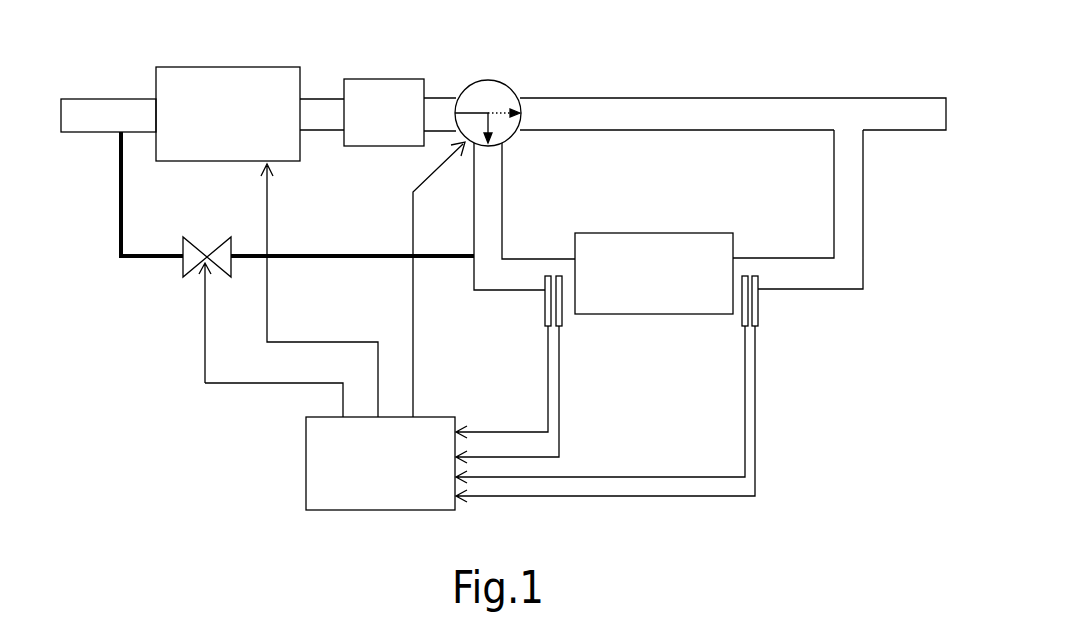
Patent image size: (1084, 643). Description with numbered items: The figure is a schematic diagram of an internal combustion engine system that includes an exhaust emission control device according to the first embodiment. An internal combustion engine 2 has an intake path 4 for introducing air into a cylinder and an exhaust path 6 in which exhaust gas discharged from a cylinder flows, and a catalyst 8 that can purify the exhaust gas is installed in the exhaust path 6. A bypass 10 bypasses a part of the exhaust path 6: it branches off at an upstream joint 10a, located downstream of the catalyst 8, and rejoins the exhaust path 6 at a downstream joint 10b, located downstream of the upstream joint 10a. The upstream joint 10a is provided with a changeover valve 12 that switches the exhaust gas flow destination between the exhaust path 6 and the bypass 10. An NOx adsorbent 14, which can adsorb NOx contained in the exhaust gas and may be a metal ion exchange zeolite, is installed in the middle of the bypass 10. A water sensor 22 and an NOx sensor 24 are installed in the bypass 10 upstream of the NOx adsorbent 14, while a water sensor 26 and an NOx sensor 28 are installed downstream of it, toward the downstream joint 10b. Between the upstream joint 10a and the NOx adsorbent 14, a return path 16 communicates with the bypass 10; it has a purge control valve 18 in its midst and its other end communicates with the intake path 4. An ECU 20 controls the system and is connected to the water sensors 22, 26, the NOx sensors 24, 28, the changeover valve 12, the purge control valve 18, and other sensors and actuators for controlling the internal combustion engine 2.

The internal combustion engine 2 is at (237, 67).
The intake path 4 is at (101, 98).
The exhaust path 6 is at (659, 97).
The catalyst 8 is at (380, 79).
The bypass 10 is at (713, 209).
The upstream joint 10a is at (490, 154).
The downstream joint 10b is at (852, 128).
The changeover valve 12 is at (488, 80).
The NOx adsorbent 14 is at (655, 233).
The return path 16 is at (355, 254).
The purge control valve 18 is at (216, 240).
The ECU 20 is at (306, 470).
The water sensor 22 is at (545, 307).
The NOx sensor 24 is at (563, 317).
The water sensor 26 is at (742, 318).
The NOx sensor 28 is at (760, 302).